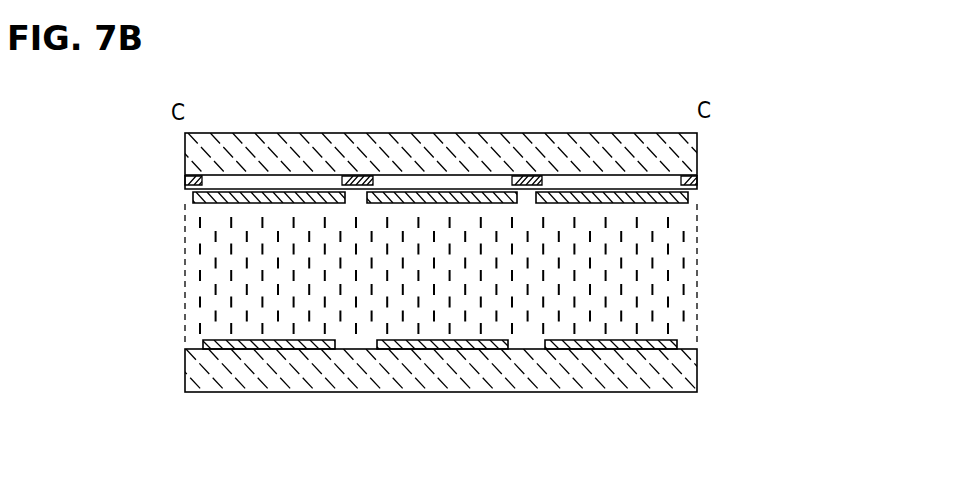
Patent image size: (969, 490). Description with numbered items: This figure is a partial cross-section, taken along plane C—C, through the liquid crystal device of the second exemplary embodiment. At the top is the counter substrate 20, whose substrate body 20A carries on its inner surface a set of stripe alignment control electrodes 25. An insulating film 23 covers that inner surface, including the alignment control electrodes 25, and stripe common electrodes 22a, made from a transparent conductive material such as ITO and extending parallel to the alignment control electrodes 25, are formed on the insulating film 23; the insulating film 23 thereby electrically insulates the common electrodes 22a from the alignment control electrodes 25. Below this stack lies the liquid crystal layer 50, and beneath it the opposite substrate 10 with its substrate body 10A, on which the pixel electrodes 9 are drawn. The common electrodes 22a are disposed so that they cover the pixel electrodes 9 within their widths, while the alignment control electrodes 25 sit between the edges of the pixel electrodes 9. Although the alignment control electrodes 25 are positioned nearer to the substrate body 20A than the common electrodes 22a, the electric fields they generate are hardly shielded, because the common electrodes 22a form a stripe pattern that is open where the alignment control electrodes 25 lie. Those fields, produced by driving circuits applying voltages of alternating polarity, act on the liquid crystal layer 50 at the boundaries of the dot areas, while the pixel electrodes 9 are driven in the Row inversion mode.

The counter substrate 20 is at (183, 157).
The substrate body 20A is at (697, 153).
The insulating film 23 is at (697, 188).
The alignment control electrode 25 is at (355, 176).
The common electrode 22a is at (455, 191).
The liquid crystal layer 50 is at (690, 282).
The array substrate 10 is at (183, 362).
The first transparent substrate 10A is at (692, 375).
The pixel electrode 9 is at (438, 349).